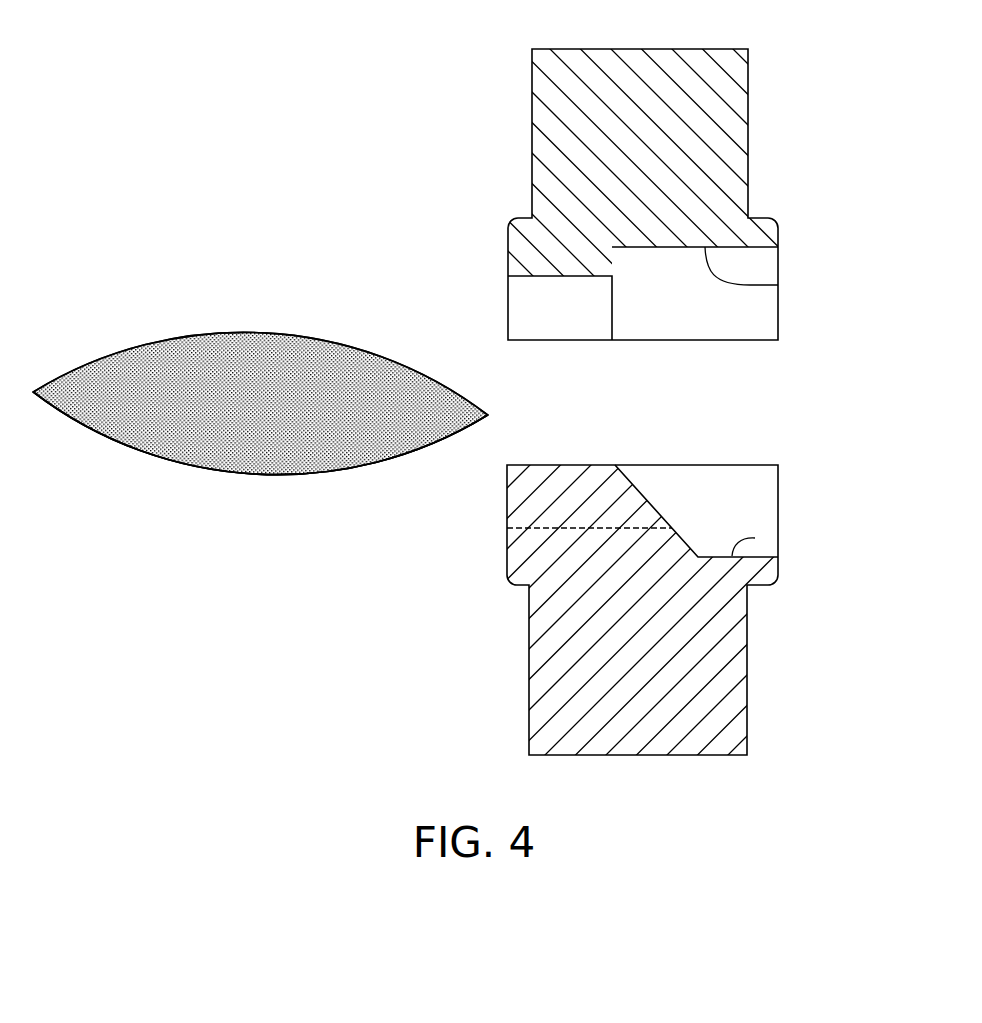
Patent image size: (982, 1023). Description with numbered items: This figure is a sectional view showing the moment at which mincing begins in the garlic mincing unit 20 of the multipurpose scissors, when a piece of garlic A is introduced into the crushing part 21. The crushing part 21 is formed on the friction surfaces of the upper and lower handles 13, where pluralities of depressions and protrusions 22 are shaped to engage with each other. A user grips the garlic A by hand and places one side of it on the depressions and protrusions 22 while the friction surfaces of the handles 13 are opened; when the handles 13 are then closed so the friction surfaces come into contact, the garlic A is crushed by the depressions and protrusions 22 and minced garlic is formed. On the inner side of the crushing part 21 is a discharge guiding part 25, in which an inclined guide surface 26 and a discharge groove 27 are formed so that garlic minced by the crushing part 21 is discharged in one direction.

The garlic mincing unit 20 is at (339, 205).
The garlic A is at (229, 376).
The crushing part 21 is at (457, 471).
The upper and lower handles 13 is at (695, 142).
The depressions and protrusions 22 is at (547, 324).
The discharge guiding part 25 is at (803, 497).
The inclined guide surface 26 is at (657, 507).
The discharge groove 27 is at (778, 284).